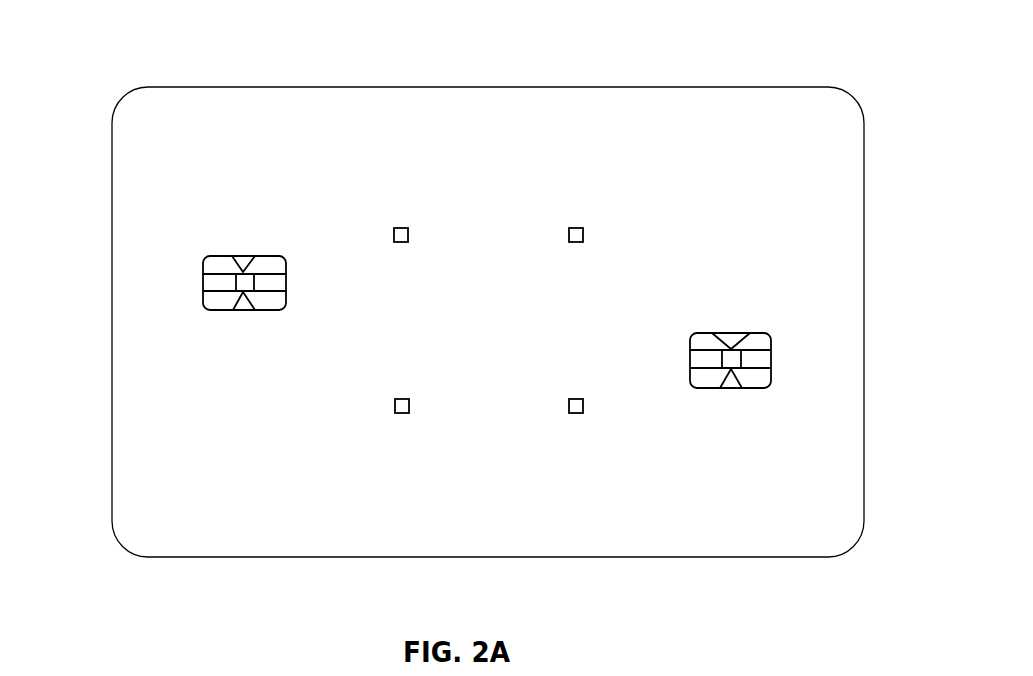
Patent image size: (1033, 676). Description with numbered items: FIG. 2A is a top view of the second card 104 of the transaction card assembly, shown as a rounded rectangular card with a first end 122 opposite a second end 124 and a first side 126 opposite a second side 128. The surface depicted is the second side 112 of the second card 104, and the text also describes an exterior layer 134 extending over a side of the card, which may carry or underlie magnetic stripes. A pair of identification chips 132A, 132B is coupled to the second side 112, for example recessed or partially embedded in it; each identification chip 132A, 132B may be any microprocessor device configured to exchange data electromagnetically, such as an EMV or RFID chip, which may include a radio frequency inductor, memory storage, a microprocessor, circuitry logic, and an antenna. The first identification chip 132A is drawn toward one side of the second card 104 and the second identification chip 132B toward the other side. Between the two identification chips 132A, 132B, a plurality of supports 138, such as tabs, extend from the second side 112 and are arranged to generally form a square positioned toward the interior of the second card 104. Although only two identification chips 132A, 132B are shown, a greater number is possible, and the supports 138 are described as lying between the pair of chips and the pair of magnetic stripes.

The second card 104 is at (589, 100).
The second side 112 is at (843, 262).
The first end 122 is at (112, 273).
The second end 124 is at (865, 322).
The first side 126 is at (502, 87).
The second side 128 is at (695, 557).
The identification chip 132A is at (245, 312).
The identification chip 132B is at (711, 333).
The exterior layer 134 is at (343, 538).
The supports 138 is at (402, 228).